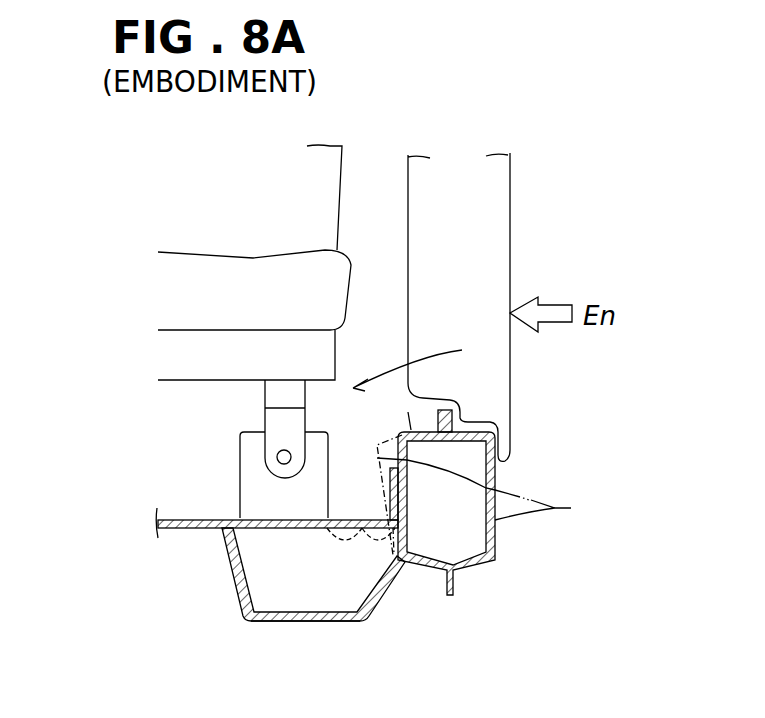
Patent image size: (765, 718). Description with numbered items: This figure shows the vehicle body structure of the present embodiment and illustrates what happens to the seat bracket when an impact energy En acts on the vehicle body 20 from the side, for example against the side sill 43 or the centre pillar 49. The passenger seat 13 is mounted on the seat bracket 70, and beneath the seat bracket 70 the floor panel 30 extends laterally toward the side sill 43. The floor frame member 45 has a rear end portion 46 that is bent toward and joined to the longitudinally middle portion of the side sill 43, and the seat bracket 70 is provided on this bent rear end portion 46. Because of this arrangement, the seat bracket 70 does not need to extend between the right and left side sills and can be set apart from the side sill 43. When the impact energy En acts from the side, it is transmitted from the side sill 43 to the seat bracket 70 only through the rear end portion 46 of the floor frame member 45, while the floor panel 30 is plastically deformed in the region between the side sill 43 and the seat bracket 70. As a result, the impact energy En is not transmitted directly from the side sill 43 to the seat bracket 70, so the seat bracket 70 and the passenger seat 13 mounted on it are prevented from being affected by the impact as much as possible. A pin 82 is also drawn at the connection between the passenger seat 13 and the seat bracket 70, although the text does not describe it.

The vehicle body 20 is at (554, 134).
The centre pillar 49 is at (495, 220).
The passenger seat 13 is at (177, 313).
The pin 82 is at (262, 423).
The seat bracket 70 is at (250, 485).
The floor panel 30 is at (190, 530).
The floor frame member 45 is at (280, 637).
The rear end portion 46 is at (335, 622).
The side sill 43 is at (493, 502).